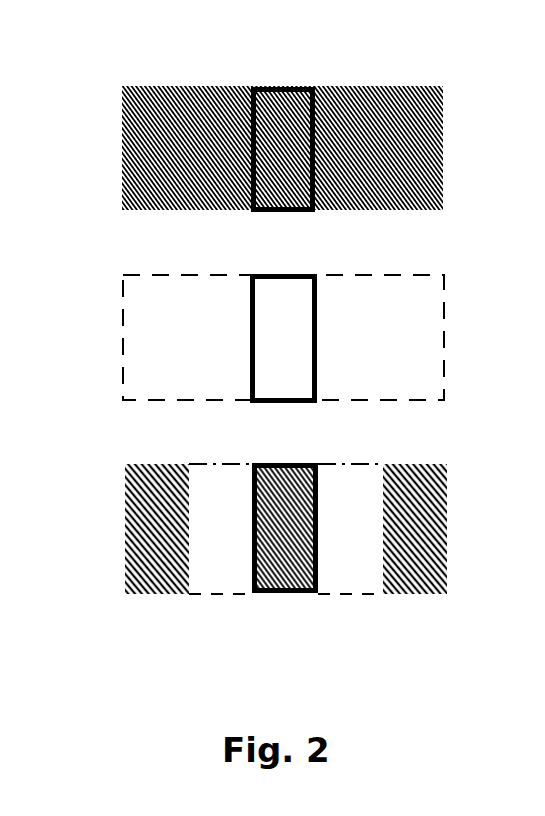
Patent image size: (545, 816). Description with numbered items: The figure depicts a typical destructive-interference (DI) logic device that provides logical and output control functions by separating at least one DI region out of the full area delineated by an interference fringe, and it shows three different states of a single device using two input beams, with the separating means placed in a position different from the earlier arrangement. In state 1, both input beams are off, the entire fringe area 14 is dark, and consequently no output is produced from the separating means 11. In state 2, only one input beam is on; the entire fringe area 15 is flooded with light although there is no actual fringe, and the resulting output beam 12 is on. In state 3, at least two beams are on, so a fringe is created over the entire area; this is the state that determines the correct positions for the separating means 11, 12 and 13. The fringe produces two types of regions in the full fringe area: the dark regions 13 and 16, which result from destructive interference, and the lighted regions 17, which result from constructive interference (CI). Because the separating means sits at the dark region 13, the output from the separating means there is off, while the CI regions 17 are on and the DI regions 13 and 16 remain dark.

The state 1 is at (100, 130).
The state 2 is at (105, 326).
The state 3 is at (108, 518).
The separating means 11 is at (274, 108).
The output beam 12 is at (290, 350).
The dark region 13 is at (287, 565).
The fringe area 14 is at (422, 143).
The fringe area 15 is at (415, 325).
The dark region 16 is at (156, 565).
The lighted region 17 is at (215, 567).